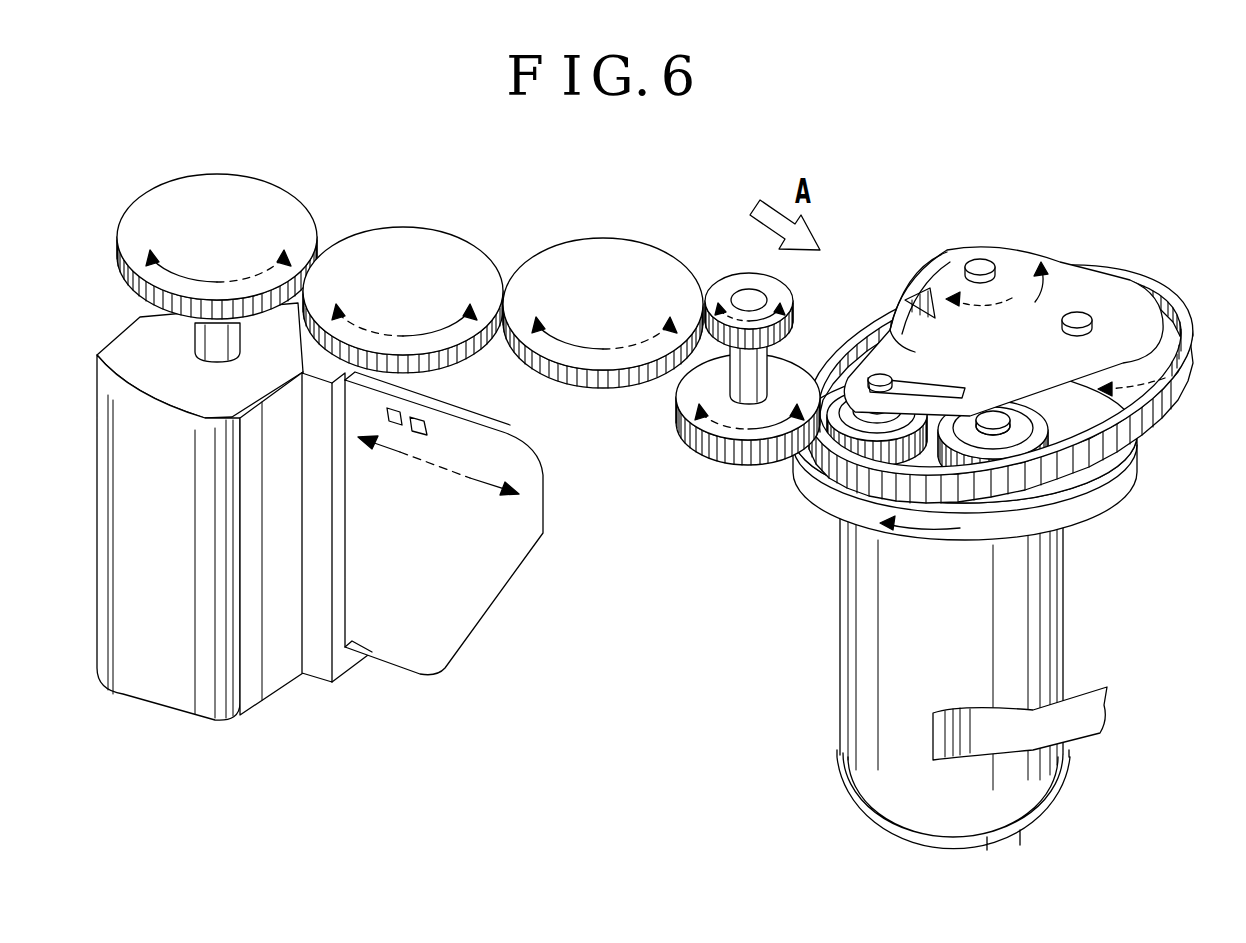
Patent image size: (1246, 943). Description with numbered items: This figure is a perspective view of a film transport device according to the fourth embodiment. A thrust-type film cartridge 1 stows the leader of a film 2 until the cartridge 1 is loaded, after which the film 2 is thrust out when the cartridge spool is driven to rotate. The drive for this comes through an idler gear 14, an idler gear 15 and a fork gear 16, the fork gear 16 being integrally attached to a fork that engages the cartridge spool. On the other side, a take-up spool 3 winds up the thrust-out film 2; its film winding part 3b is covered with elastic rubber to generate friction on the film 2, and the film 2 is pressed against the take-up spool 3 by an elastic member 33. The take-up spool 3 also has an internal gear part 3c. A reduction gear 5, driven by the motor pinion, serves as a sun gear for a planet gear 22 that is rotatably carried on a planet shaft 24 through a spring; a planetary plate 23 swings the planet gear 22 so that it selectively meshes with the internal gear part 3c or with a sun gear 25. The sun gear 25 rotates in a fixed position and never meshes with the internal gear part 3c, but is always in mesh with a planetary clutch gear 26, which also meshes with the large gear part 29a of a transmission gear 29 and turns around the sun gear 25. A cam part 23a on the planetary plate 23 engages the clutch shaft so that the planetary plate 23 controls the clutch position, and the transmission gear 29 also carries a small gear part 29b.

The film cartridge 1 is at (165, 680).
The film 2 is at (410, 635).
The take-up spool 3 is at (1070, 510).
The film winding part 3b is at (1055, 635).
The internal gear part 3c is at (1138, 440).
The reduction gear 5 is at (940, 255).
The idler gear 14 is at (620, 272).
The idler gear 15 is at (430, 268).
The fork gear 16 is at (240, 200).
The planet gear 22 is at (1153, 280).
The planetary plate 23 is at (1050, 287).
The cam part 23a is at (878, 372).
The planet shaft 24 is at (1082, 313).
The sun gear 25 is at (1045, 475).
The planetary clutch gear 26 is at (837, 455).
The transmission gear 29 is at (702, 371).
The large gear part 29a is at (715, 452).
The small gear 29b is at (720, 285).
The elastic member 33 is at (1080, 725).